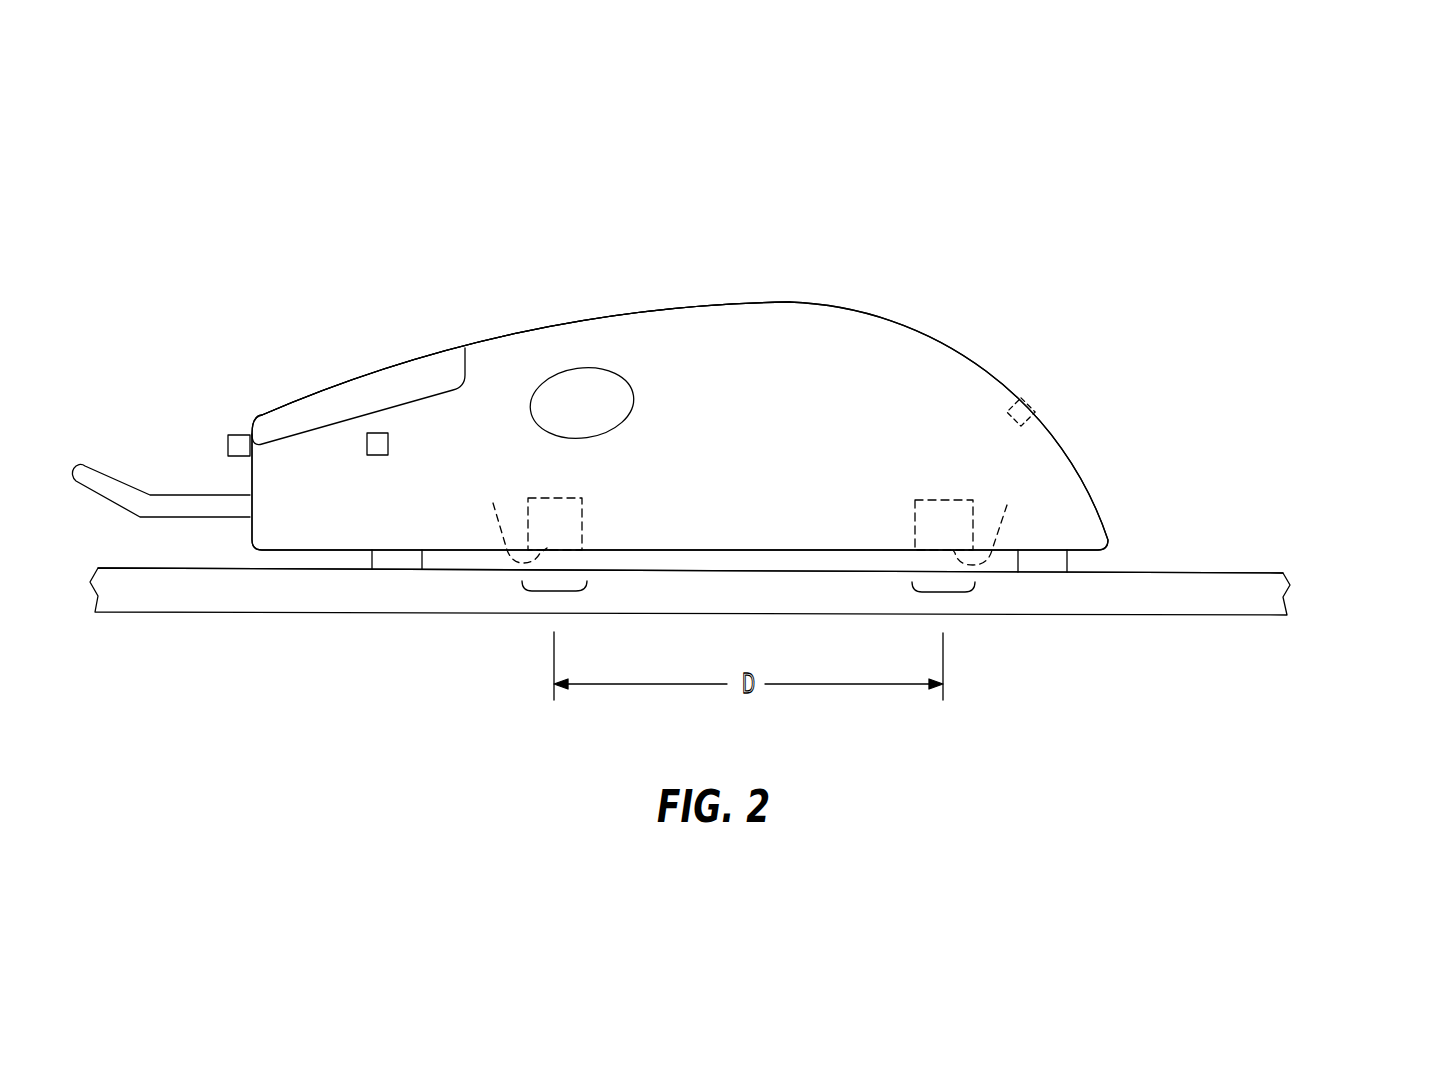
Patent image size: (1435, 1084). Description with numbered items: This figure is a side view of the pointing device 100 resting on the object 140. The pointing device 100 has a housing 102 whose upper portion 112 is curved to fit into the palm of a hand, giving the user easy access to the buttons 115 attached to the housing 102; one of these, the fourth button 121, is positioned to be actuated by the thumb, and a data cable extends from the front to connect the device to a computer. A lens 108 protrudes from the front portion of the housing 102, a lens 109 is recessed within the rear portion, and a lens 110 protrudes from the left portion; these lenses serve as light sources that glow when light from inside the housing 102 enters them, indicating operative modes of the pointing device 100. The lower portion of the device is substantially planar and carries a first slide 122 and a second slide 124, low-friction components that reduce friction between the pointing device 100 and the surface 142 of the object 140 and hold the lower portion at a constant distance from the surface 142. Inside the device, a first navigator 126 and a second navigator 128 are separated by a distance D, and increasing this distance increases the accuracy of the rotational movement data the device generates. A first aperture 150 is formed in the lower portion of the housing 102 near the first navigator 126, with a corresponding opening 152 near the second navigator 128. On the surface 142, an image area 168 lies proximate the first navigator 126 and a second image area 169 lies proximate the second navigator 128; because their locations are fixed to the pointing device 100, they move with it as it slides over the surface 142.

The pointing device 100 is at (1052, 280).
The housing 102 is at (850, 298).
The lens 108 is at (228, 447).
The lens 109 is at (1028, 404).
The lens 110 is at (388, 444).
The upper portion 112 is at (653, 312).
The buttons 115 is at (337, 362).
The fourth button 121 is at (634, 392).
The first slide 122 is at (372, 559).
The second slide 124 is at (1067, 562).
The first navigator 126 is at (563, 498).
The second navigator 128 is at (933, 497).
The object 140 is at (1312, 592).
The surface 142 is at (1248, 573).
The first aperture 150 is at (509, 514).
The second light beam 152 is at (990, 517).
The image area 168 is at (554, 591).
The second image area 169 is at (943, 592).